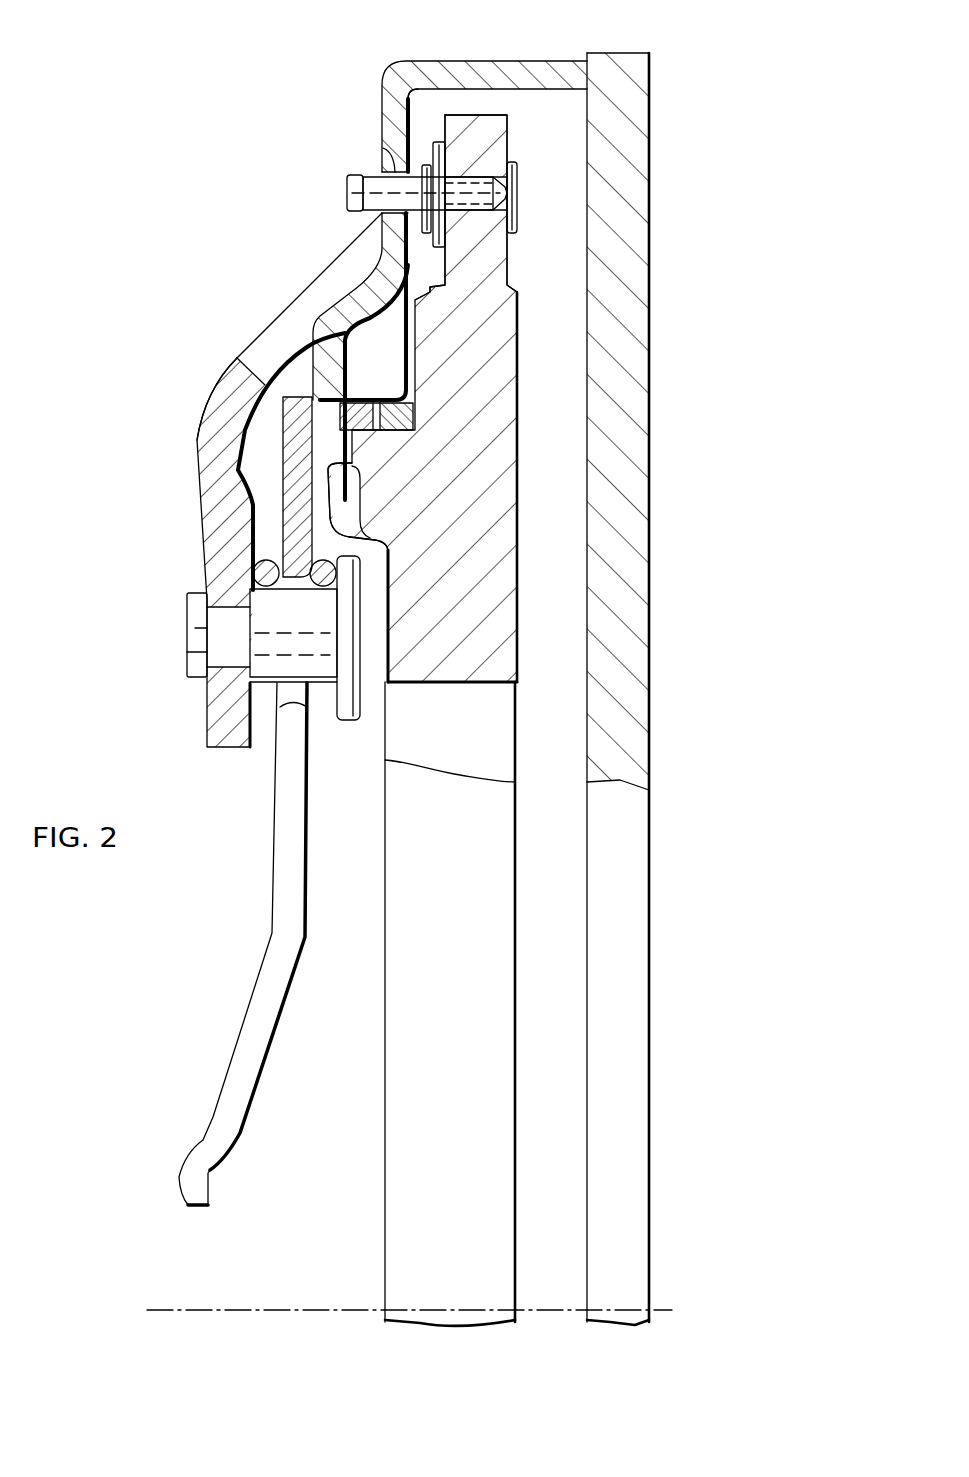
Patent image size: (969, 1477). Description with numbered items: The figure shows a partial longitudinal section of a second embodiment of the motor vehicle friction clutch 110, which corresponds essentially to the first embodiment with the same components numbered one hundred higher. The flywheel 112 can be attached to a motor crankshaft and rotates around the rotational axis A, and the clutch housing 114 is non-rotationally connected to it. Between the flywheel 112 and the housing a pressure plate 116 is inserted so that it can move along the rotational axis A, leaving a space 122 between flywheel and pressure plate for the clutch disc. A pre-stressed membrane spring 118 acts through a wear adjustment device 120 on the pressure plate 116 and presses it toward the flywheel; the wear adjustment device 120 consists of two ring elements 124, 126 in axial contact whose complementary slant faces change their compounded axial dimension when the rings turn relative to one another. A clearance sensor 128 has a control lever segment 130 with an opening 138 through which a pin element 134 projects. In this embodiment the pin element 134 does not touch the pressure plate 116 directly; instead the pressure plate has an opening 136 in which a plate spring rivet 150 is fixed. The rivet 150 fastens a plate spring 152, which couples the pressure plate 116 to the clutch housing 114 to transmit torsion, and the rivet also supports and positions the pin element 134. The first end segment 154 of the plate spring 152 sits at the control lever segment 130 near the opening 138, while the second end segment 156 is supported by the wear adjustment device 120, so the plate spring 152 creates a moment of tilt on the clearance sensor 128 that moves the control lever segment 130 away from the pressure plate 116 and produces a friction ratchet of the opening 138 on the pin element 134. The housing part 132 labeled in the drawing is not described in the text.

The motor vehicle friction clutch 110 is at (204, 356).
The flywheel 112 is at (636, 857).
The clutch housing 114 is at (203, 457).
The pressure plate 116 is at (395, 1163).
The membrane spring 118 is at (265, 985).
The wear adjustment device 120 is at (400, 446).
The space 122 is at (528, 398).
The ring element 124 is at (415, 412).
The ring element 126 is at (362, 432).
The clearance sensor 128 is at (288, 141).
The control lever segment 130 is at (367, 285).
The bracket housing 132 is at (515, 72).
The pin element 134 is at (348, 190).
The opening 136 is at (467, 160).
The opening 138 is at (382, 148).
The plate spring rivet 150 is at (517, 197).
The plate spring 152 is at (412, 342).
The first end segment 154 is at (415, 133).
The second end segment 156 is at (307, 345).
The rotational axis A is at (175, 1310).